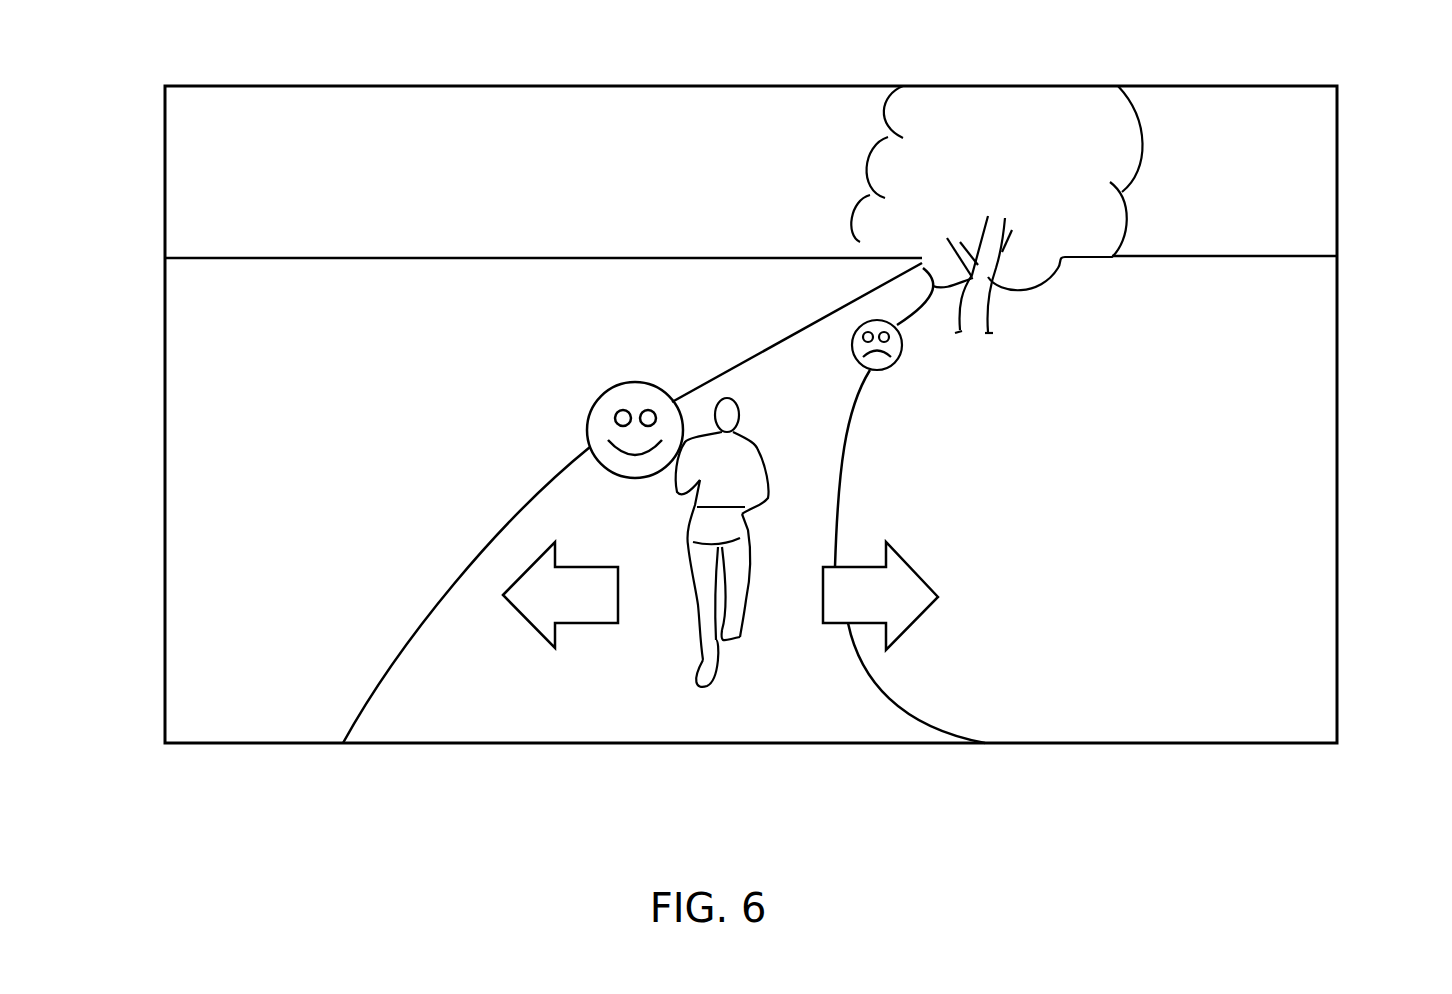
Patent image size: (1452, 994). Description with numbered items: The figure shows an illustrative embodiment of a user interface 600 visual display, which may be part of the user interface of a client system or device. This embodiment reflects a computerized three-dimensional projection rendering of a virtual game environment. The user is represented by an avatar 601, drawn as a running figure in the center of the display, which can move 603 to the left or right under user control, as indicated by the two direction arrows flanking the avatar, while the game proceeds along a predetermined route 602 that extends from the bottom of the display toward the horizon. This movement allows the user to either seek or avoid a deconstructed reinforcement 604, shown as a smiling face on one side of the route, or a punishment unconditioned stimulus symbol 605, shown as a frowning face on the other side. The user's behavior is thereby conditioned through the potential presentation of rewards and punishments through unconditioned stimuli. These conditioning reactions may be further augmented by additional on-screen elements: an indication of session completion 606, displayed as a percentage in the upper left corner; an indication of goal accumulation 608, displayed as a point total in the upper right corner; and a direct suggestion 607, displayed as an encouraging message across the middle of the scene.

The user interface 600 is at (249, 86).
The avatar 601 is at (697, 692).
The predetermined route 602 is at (408, 721).
The movement 603 is at (525, 642).
The deconstructed reinforcement 604 is at (580, 402).
The punishment unconditioned stimulus symbol 605 is at (916, 351).
The indication of session completion 606 is at (266, 133).
The direct suggestion 607 is at (752, 226).
The indication of goal accumulation 608 is at (1242, 130).